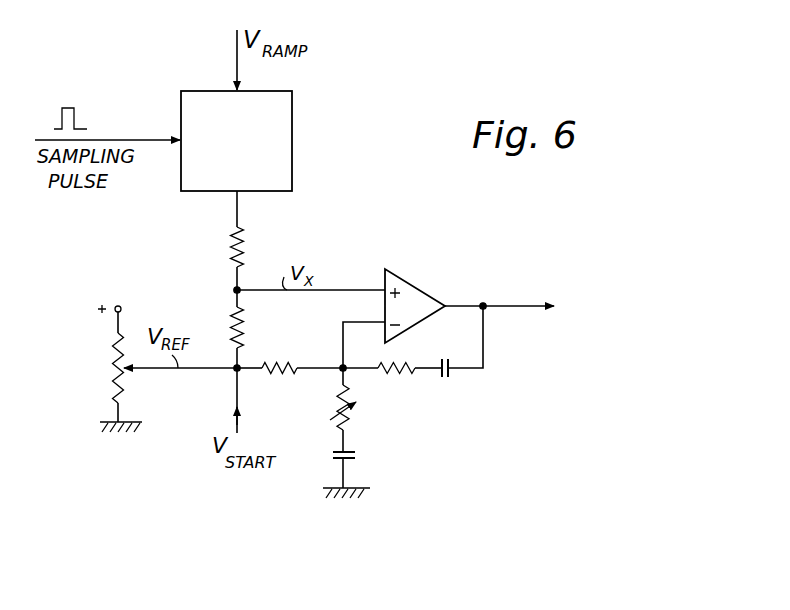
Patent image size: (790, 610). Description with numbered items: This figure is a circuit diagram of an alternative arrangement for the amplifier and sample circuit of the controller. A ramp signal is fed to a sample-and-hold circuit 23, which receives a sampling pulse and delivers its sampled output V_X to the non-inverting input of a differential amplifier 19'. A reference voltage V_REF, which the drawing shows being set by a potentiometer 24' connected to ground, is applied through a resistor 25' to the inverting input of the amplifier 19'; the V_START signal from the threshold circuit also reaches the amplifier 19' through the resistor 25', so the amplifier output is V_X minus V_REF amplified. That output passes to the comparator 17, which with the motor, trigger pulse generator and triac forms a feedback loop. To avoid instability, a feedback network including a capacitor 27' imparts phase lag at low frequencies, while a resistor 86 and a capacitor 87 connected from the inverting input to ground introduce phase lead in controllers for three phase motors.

The sample-and-hold circuit 23 is at (292, 128).
The potentiometer 24' is at (141, 368).
The resistor 25' is at (290, 349).
The differential amplifier 19' is at (418, 290).
The comparator 17 is at (569, 307).
The capacitor 27' is at (473, 382).
The resistor 86 is at (337, 403).
The capacitor 87 is at (356, 460).